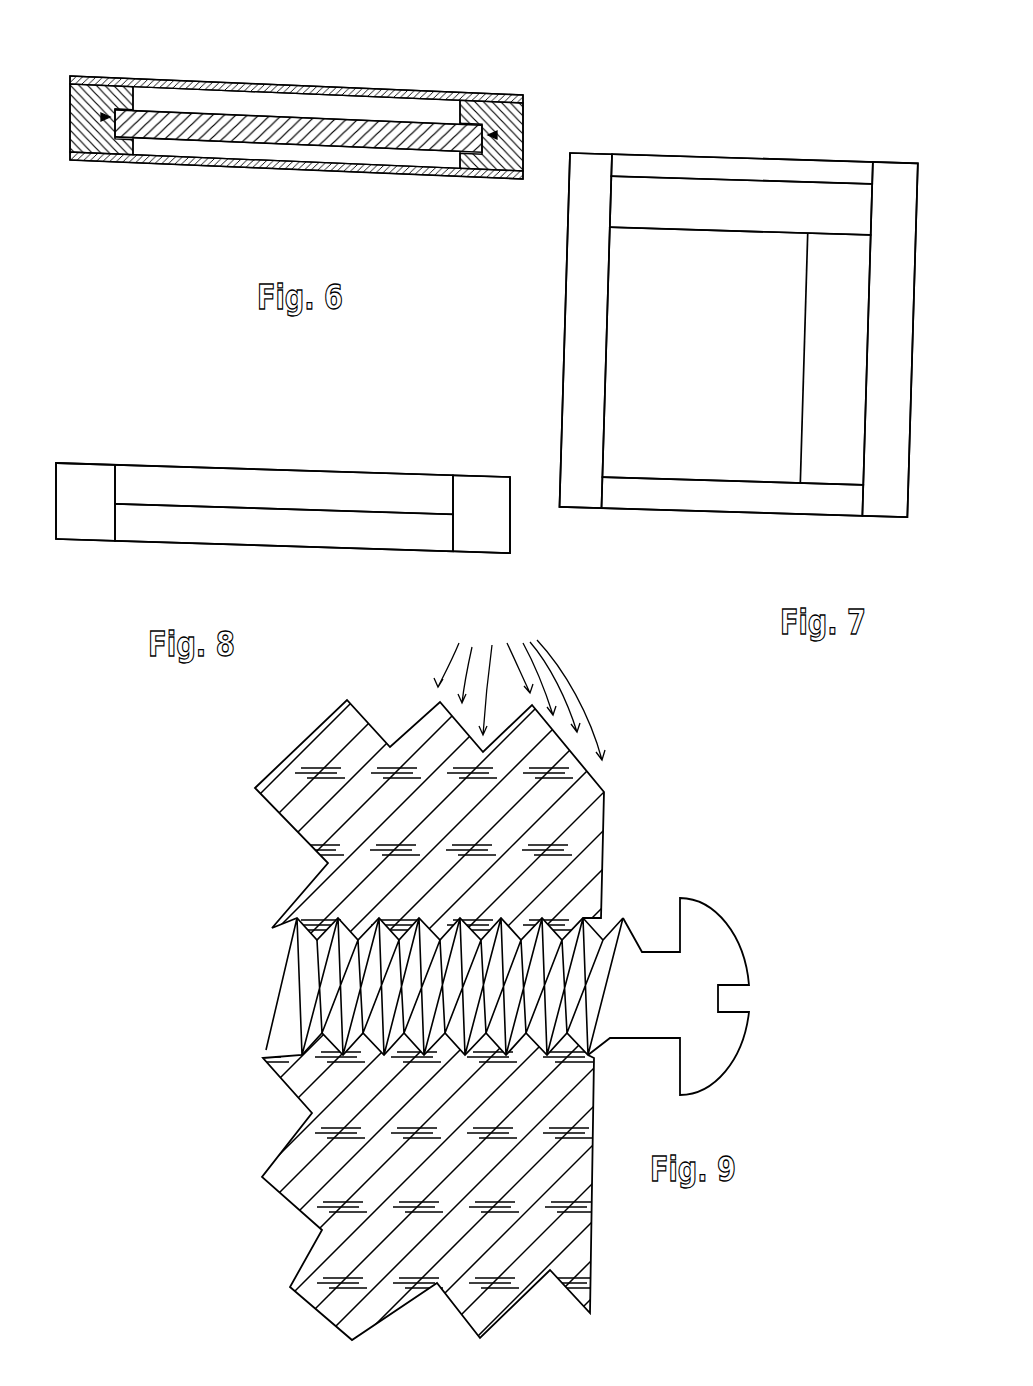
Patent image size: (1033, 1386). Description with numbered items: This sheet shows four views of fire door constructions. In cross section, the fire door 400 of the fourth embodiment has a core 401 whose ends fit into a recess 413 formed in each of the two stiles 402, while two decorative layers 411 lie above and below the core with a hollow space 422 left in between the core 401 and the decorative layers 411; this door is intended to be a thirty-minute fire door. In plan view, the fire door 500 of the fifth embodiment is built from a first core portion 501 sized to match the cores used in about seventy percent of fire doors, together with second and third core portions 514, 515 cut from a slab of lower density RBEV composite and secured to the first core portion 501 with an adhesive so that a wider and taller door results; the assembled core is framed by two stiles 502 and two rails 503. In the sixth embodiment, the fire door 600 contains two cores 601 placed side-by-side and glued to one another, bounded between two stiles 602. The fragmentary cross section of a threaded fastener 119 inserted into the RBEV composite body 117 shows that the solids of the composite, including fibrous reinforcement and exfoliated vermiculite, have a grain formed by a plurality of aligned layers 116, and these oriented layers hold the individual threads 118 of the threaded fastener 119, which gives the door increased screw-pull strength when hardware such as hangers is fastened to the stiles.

In FIG. 6, the fire door 400 is at (135, 206).
In FIG. 6, the core 401 is at (228, 132).
In FIG. 6, the stile 402 is at (68, 133).
In FIG. 6, the decorative layer 411 is at (250, 83).
In FIG. 6, the recess 413 is at (107, 117).
In FIG. 6, the hollow space 422 is at (313, 103).
In FIG. 7, the fire door 500 is at (662, 552).
In FIG. 7, the first core portion 501 is at (625, 346).
In FIG. 7, the stile 502 is at (896, 173).
In FIG. 7, the rail 503 is at (666, 162).
In FIG. 7, the second core portion 514 is at (829, 453).
In FIG. 7, the third core portion 515 is at (746, 192).
In FIG. 8, the fire door 600 is at (114, 580).
In FIG. 8, the core 601 is at (205, 478).
In FIG. 8, the stile 602 is at (77, 477).
In FIG. 9, the aligned layers 116 is at (519, 687).
In FIG. 9, the wood block 117 is at (637, 821).
In FIG. 9, the threads 118 is at (553, 1046).
In FIG. 9, the threaded fastener 119 is at (762, 916).